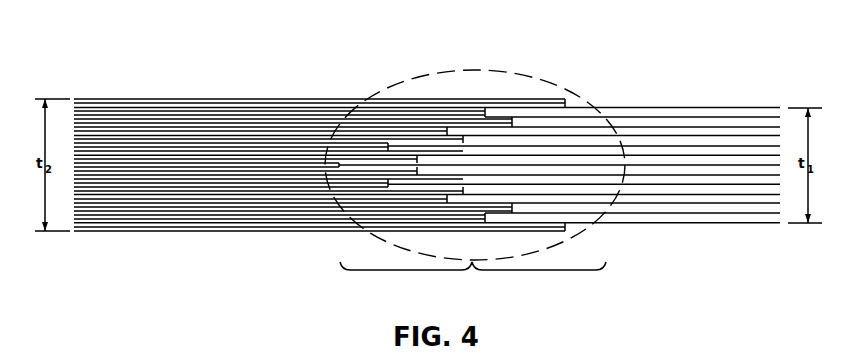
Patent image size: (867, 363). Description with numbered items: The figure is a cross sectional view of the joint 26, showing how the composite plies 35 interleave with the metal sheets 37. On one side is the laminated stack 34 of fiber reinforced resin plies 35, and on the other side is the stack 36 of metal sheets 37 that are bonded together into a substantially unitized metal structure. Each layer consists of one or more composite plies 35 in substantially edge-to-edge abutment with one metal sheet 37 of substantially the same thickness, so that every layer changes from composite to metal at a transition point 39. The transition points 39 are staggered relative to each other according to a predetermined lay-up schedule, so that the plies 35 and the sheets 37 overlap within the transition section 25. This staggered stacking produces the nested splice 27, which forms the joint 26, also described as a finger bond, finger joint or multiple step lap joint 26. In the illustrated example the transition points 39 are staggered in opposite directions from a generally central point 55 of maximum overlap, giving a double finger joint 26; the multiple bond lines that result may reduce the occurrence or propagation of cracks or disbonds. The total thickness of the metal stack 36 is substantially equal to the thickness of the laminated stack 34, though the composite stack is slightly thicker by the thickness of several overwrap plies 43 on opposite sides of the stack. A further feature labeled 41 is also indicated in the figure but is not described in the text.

The transition section 25 is at (473, 281).
The joint 26 is at (418, 76).
The nested splice 27 is at (362, 197).
The laminated stack 34 is at (118, 88).
The composite plies 35 is at (242, 160).
The stack of metal sheets 36 is at (757, 92).
The metal sheet 37 is at (705, 148).
The transition point 39 is at (388, 137).
The ply overlap 41 is at (451, 128).
The overwrap plies 43 is at (543, 98).
The central point of maximum overlap 55 is at (354, 158).